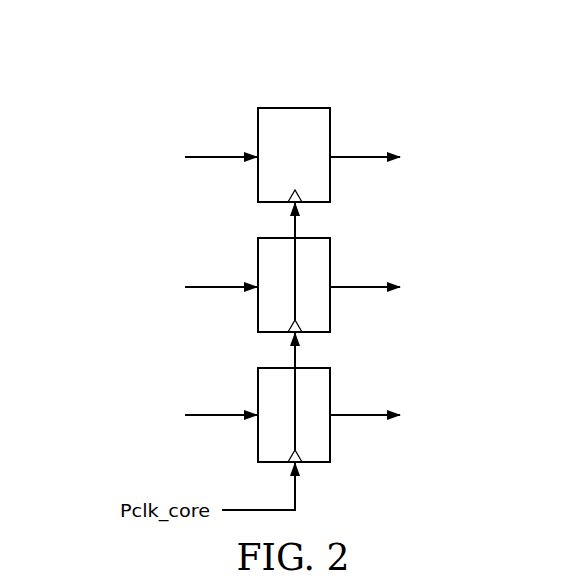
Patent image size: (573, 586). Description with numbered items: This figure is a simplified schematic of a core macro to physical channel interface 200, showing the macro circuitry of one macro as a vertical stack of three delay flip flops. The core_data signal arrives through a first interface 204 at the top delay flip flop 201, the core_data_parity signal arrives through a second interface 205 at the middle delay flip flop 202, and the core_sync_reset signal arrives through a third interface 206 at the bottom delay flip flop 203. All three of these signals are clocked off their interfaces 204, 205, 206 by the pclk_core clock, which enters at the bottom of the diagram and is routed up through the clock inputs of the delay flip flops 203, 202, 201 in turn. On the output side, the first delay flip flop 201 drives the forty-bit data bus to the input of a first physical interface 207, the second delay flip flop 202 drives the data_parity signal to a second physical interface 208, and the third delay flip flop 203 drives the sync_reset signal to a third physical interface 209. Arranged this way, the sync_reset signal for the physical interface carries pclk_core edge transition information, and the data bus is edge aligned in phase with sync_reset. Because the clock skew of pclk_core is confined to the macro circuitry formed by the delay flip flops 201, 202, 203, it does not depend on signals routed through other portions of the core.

The synchronization circuit 200 is at (434, 61).
The delay flip flop 201 is at (258, 180).
The delay flip flop 202 is at (258, 310).
The delay flip flop 203 is at (258, 392).
The interface 204 is at (222, 153).
The interface 205 is at (222, 283).
The interface 206 is at (222, 419).
The physical interface 207 is at (358, 153).
The physical interface 208 is at (358, 283).
The physical interface 209 is at (358, 418).